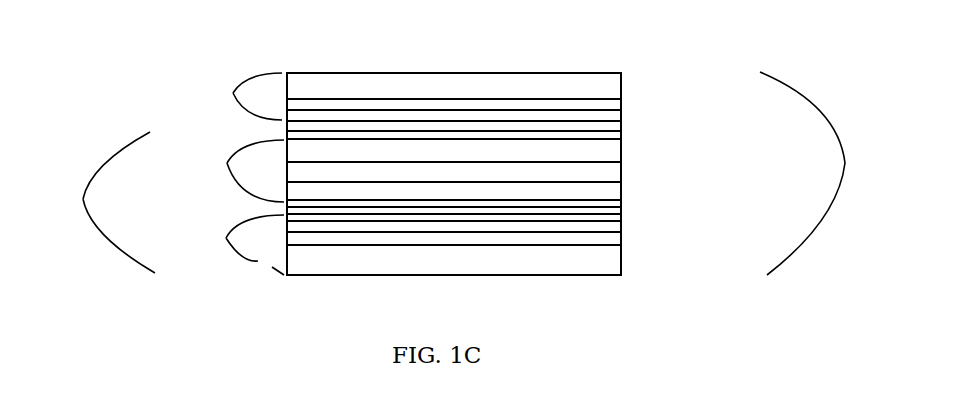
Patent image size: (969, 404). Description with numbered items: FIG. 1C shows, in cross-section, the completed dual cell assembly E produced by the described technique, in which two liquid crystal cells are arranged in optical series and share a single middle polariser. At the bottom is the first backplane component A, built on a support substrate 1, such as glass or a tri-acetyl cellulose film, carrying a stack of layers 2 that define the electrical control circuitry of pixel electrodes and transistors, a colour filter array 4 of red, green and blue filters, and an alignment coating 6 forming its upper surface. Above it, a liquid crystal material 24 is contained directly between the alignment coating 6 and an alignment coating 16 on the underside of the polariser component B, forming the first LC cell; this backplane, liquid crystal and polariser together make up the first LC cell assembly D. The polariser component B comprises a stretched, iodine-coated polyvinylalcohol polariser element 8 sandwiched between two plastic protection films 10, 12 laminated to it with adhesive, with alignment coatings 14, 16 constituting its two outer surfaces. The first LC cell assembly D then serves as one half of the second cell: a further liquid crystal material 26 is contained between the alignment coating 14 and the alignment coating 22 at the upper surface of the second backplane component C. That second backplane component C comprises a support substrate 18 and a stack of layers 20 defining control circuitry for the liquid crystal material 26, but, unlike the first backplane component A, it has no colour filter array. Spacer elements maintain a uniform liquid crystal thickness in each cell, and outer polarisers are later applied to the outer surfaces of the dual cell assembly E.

The support substrate 1 is at (573, 265).
The stack of layers 2 is at (622, 238).
The colour filter array 4 is at (615, 227).
The alignment coating 6 is at (622, 218).
The polariser element 8 is at (622, 175).
The plastic protection film 10 is at (622, 153).
The plastic protection film 12 is at (612, 193).
The alignment coating 14 is at (622, 135).
The alignment coating 16 is at (622, 203).
The support substrate 18 is at (505, 85).
The stack of layers 20 is at (570, 107).
The alignment coating 22 is at (622, 115).
The liquid crystal material 24 is at (622, 210).
The liquid crystal material 26 is at (622, 125).
The first backplane component A is at (226, 238).
The polariser component B is at (227, 163).
The second backplane component C is at (233, 93).
The first LC cell assembly D is at (83, 199).
The dual cell assembly E is at (845, 163).